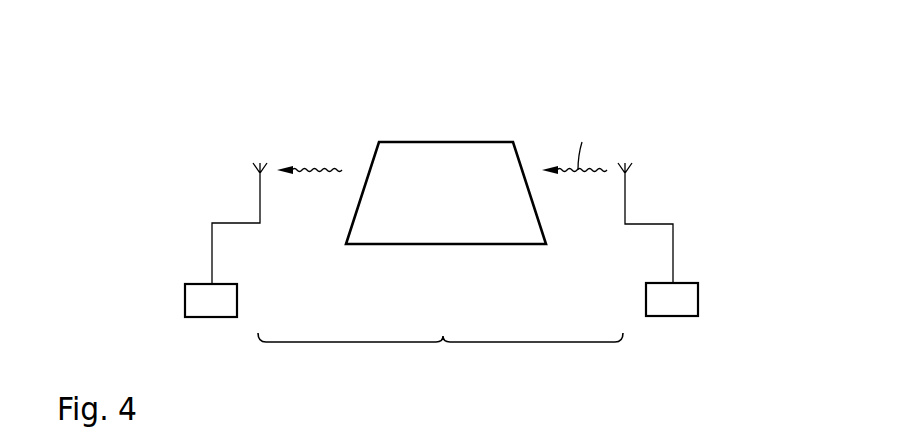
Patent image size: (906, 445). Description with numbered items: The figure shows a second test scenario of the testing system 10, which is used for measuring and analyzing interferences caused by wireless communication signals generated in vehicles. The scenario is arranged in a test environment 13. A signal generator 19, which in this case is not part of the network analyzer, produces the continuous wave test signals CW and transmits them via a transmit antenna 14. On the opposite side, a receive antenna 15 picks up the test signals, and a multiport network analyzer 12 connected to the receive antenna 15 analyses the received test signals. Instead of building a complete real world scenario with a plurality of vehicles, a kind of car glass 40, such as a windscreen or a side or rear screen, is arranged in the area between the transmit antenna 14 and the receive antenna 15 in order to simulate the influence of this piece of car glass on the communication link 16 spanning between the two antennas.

The testing system 10 is at (199, 95).
The multiport network analyzer 12 is at (185, 302).
The test environment 13 is at (309, 112).
The transmit antenna 14 is at (627, 198).
The receive antenna 15 is at (258, 200).
The communication link 16 is at (440, 355).
The signal generator 19 is at (700, 300).
The car glass 40 is at (445, 141).